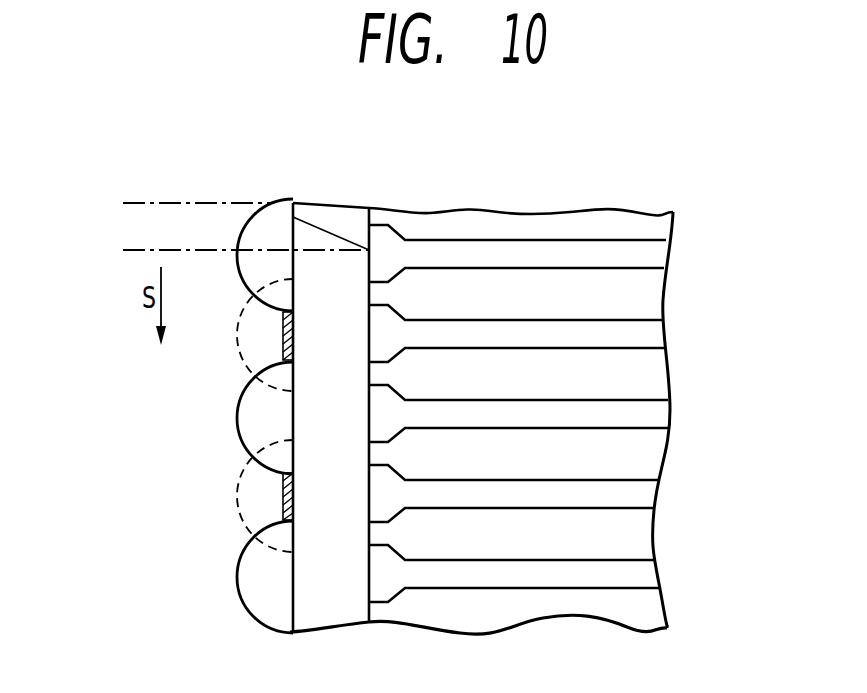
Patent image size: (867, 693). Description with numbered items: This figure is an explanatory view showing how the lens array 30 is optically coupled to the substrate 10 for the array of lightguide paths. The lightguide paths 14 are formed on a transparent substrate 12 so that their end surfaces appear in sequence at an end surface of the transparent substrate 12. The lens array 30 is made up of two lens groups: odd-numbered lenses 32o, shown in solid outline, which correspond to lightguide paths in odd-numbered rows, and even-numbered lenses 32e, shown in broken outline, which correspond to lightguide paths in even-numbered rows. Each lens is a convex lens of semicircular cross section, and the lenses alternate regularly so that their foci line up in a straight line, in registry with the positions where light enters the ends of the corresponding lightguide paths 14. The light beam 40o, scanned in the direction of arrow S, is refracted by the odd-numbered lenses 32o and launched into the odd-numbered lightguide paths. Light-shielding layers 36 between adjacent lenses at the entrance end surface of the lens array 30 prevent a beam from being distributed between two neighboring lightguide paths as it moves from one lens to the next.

The substrate for the array of lightguide paths 10 is at (502, 194).
The transparent substrate 12 is at (655, 300).
The lightguide paths 14 is at (568, 247).
The lens array 30 is at (341, 192).
The odd-numbered lenses 32o is at (273, 217).
The even-numbered lenses 32e is at (247, 347).
The light-shielding layers 36 is at (280, 334).
The light beam for odd-numbered lenses 40o is at (140, 217).